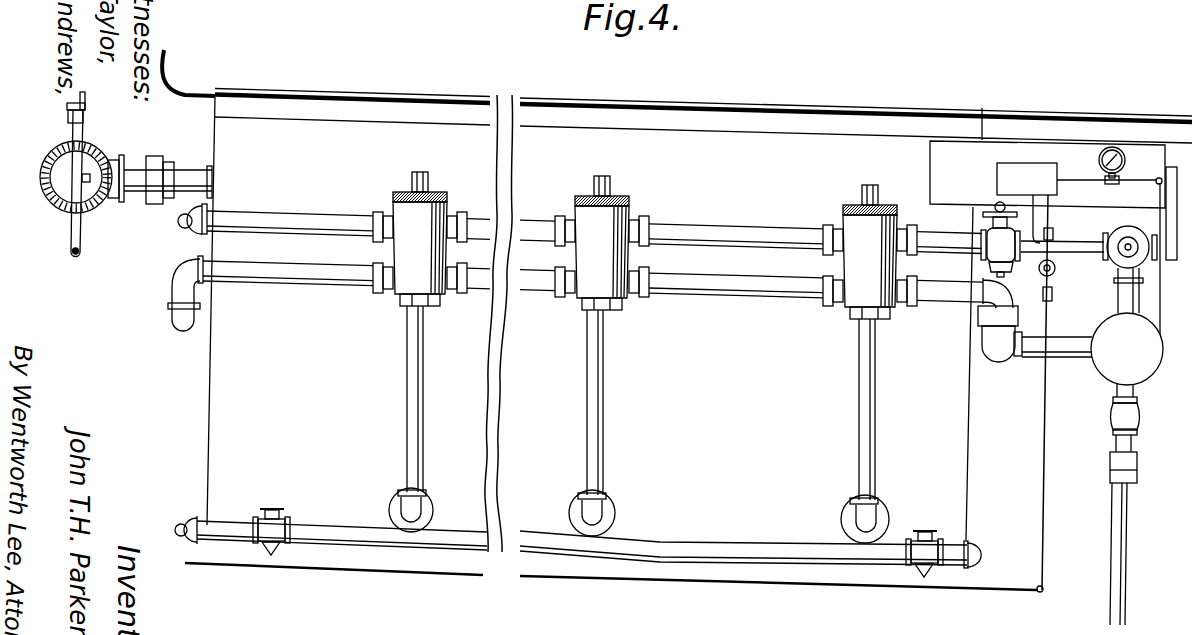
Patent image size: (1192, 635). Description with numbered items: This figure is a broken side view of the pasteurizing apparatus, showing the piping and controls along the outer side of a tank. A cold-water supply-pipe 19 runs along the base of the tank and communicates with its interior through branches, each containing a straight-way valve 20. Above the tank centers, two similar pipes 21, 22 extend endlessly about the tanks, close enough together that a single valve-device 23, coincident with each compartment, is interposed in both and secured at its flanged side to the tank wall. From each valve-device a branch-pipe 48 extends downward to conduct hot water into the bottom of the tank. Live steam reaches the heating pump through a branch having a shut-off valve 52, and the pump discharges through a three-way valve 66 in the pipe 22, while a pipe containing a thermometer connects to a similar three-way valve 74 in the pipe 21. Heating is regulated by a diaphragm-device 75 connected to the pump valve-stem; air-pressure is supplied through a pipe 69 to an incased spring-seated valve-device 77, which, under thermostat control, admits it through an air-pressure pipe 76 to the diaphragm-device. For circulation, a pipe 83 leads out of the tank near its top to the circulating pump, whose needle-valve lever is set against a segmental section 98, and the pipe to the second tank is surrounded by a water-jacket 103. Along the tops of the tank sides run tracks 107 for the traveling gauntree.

The cold-water supply-pipe 19 is at (694, 532).
The valve 20 is at (266, 515).
The pipe 21 is at (727, 228).
The pipe 22 is at (727, 285).
The valve-device 23 is at (445, 202).
The branch-pipe 48 is at (423, 440).
The shut-off valve 52 is at (1113, 420).
The three-way valve 66 is at (980, 323).
The air-supply pipe 69 is at (1042, 484).
The three-way valve 74 is at (995, 219).
The diaphragm-device 75 is at (1155, 317).
The air-pressure pipe 76 is at (1133, 290).
The spring-seated valve-device 77 is at (1013, 178).
The pipe 83 is at (190, 173).
The segmental section 98 is at (86, 132).
The water-jacket 103 is at (104, 205).
The tracks 107 is at (173, 82).